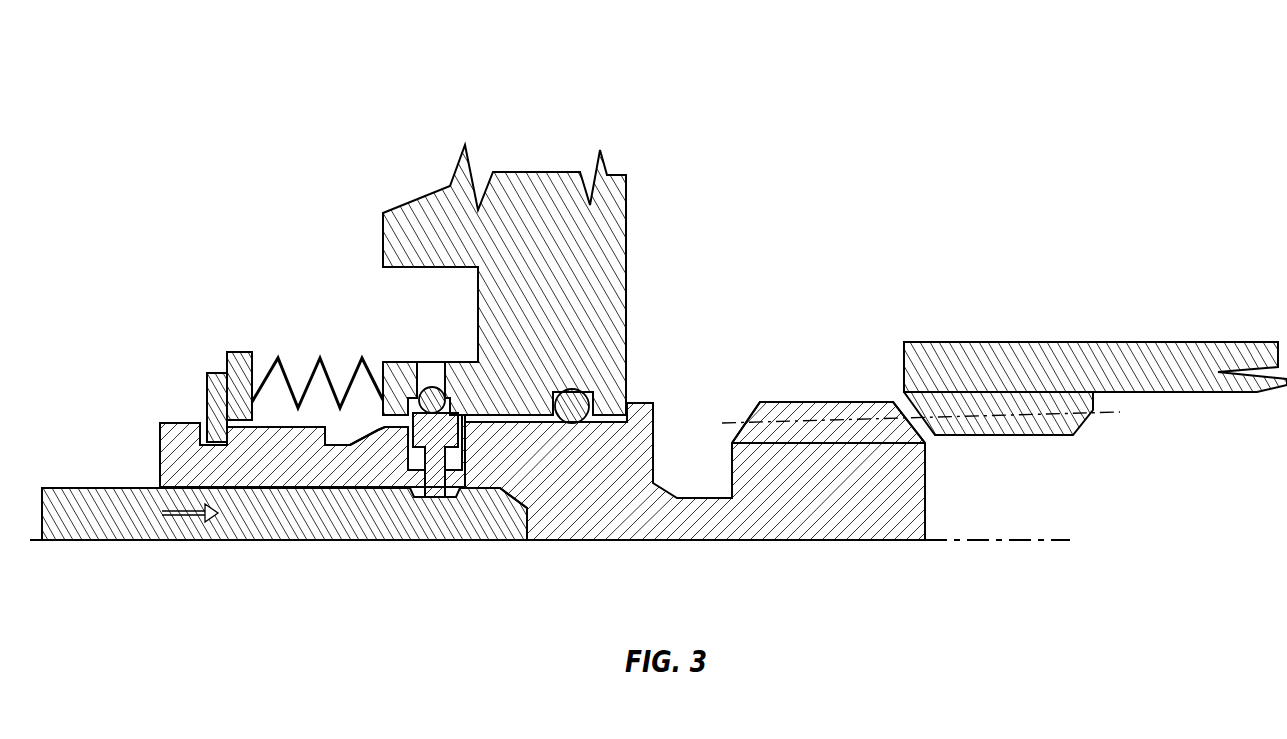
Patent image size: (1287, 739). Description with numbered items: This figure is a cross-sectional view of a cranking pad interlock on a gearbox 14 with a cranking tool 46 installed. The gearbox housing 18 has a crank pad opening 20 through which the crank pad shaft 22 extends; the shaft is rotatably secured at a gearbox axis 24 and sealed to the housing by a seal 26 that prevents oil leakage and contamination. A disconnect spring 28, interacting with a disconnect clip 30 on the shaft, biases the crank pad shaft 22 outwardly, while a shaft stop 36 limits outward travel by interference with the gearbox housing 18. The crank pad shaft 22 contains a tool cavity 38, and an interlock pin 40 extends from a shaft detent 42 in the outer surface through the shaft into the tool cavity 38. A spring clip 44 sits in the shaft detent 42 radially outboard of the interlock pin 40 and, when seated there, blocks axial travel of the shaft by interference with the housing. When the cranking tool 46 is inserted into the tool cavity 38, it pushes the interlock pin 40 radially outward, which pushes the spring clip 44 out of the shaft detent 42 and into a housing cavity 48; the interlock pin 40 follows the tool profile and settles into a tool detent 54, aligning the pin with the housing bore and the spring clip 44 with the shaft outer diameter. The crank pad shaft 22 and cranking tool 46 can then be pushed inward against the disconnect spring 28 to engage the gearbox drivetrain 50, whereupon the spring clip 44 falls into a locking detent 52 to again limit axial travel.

The gearbox 14 is at (386, 142).
The gearbox housing 18 is at (534, 172).
The crank pad opening 20 is at (390, 405).
The crank pad shaft 22 is at (695, 471).
The gearbox axis 24 is at (284, 516).
The seal 26 is at (580, 405).
The disconnect spring 28 is at (257, 351).
The disconnect clip 30 is at (212, 372).
The shaft stop 36 is at (654, 428).
The tool cavity 38 is at (176, 422).
The interlock pin 40 is at (411, 458).
The shaft detent 42 is at (467, 448).
The spring clip 44 is at (432, 388).
The cranking tool 46 is at (105, 487).
The housing cavity 48 is at (410, 397).
The gearbox drivetrain 50 is at (946, 341).
The locking detent 52 is at (330, 445).
The tool detent 54 is at (429, 492).